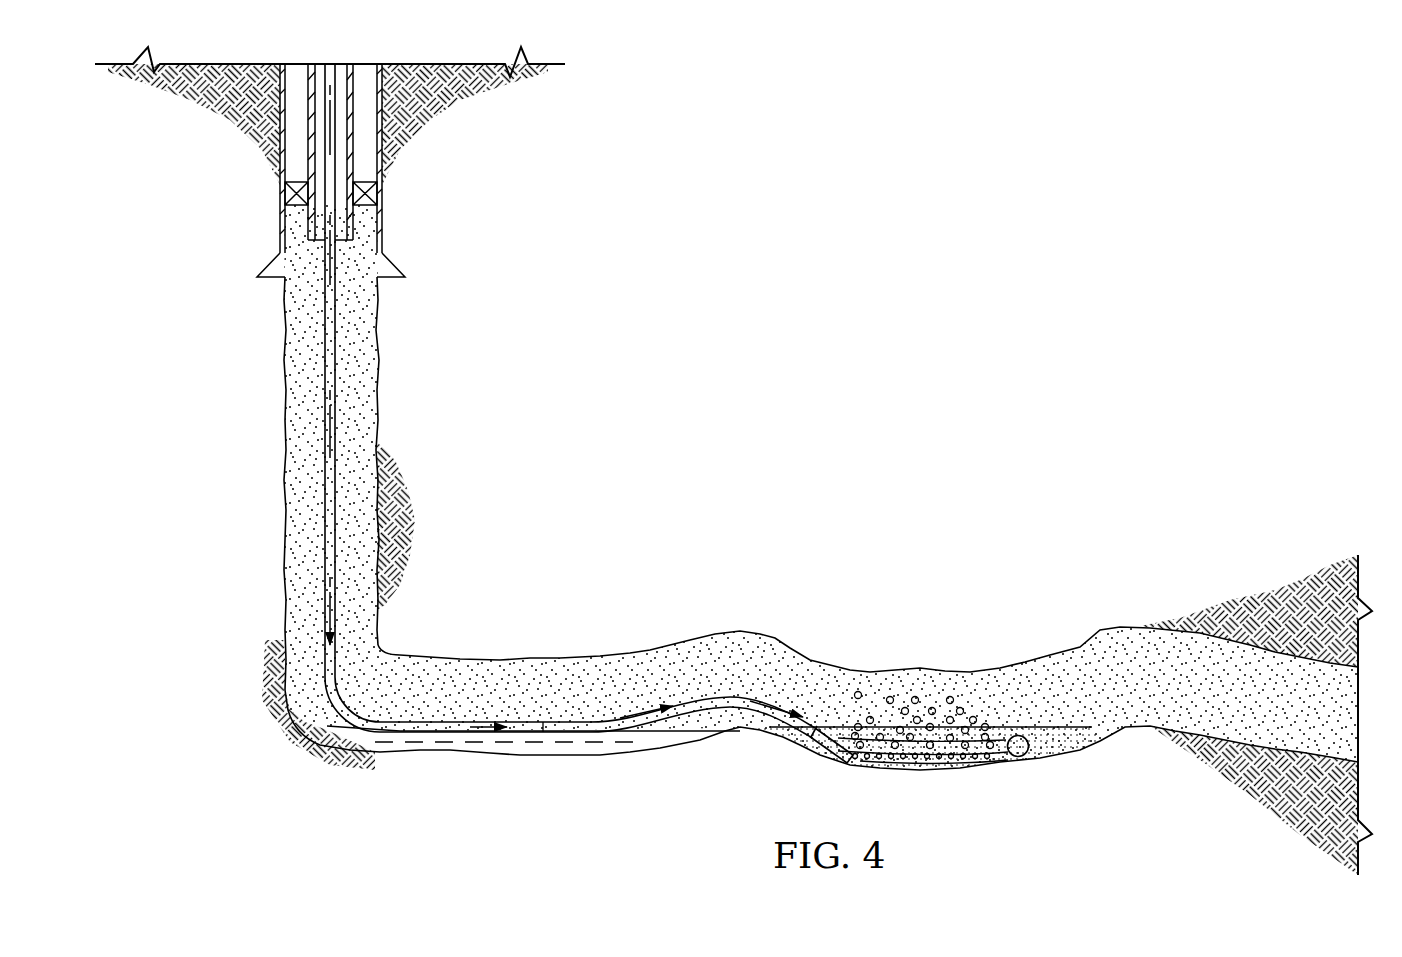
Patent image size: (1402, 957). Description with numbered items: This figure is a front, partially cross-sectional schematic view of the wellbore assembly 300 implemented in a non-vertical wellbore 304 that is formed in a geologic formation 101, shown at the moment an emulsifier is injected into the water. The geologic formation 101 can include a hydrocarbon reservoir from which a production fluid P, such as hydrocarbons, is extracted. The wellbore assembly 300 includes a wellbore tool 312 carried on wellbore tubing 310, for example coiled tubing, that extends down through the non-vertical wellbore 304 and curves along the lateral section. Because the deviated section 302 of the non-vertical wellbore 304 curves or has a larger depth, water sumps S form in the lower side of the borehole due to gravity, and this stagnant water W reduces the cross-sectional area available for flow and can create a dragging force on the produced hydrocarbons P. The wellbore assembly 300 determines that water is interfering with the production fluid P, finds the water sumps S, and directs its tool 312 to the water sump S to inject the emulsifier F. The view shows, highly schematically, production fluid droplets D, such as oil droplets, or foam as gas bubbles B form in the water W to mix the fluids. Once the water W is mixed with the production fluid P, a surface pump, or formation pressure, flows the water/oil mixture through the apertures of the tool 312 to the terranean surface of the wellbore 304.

The wellbore assembly 300 is at (982, 140).
The geologic formation 101 is at (851, 498).
The deviated section 302 is at (433, 757).
The non-vertical wellbore 304 is at (243, 508).
The wellbore tubing 310 is at (325, 353).
The wellbore tool 312 is at (855, 765).
The emulsifier F is at (325, 421).
The production fluid P is at (577, 690).
The gas bubbles B is at (912, 695).
The water sumps S is at (980, 700).
The water W is at (1041, 746).
The production fluid droplets D is at (975, 768).